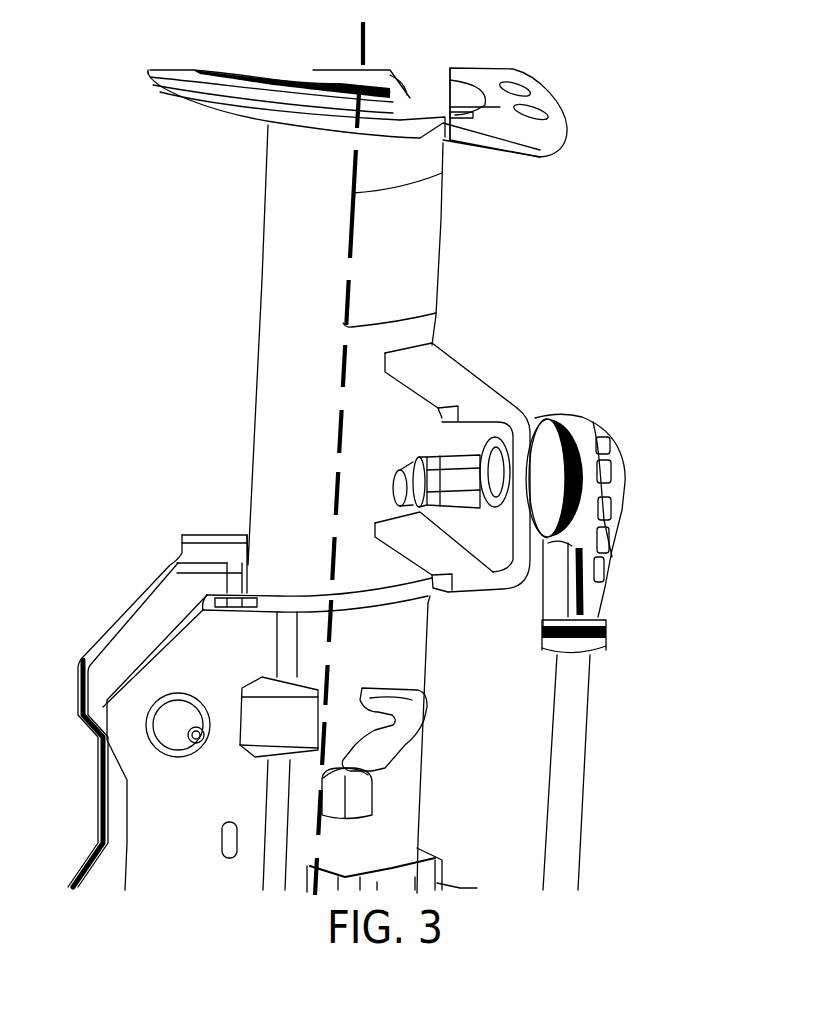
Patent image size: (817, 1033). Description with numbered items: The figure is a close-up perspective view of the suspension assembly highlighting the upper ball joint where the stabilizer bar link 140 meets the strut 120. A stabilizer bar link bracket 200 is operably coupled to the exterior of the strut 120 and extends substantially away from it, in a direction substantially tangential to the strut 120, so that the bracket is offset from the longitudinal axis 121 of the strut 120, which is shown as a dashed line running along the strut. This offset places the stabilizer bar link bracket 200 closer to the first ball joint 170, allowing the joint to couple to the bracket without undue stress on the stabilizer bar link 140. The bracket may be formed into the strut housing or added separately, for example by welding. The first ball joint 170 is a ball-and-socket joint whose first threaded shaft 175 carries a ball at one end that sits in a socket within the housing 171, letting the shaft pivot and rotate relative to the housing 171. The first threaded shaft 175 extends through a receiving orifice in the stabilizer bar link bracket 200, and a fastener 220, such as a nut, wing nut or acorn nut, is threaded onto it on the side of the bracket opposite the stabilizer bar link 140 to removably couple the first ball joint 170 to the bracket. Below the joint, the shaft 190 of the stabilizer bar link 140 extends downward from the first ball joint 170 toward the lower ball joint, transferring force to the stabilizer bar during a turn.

The strut 120 is at (272, 358).
The longitudinal axis 121 is at (330, 557).
The stabilizer bar link 140 is at (649, 629).
The first ball joint 170 is at (643, 510).
The housing 171 is at (620, 475).
The first threaded shaft 175 is at (400, 490).
The shaft 190 is at (565, 792).
The stabilizer bar link bracket 200 is at (445, 385).
The fastener 220 is at (448, 483).